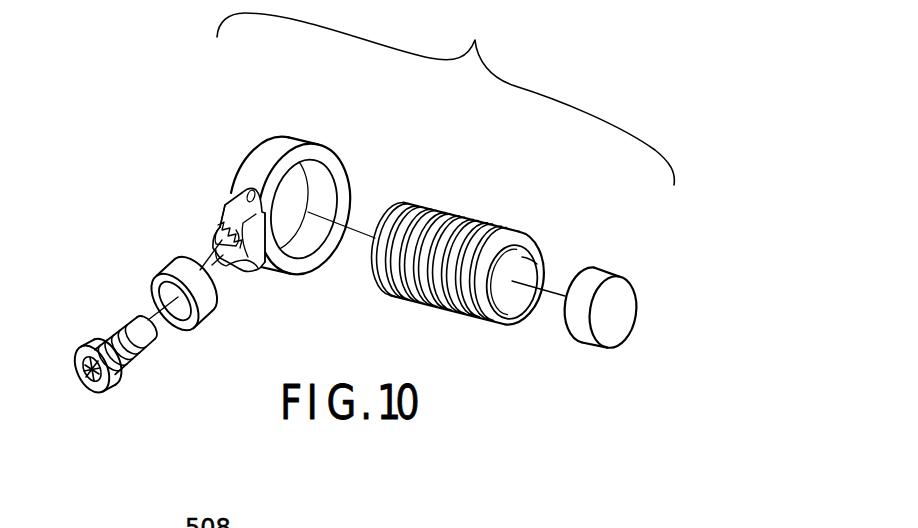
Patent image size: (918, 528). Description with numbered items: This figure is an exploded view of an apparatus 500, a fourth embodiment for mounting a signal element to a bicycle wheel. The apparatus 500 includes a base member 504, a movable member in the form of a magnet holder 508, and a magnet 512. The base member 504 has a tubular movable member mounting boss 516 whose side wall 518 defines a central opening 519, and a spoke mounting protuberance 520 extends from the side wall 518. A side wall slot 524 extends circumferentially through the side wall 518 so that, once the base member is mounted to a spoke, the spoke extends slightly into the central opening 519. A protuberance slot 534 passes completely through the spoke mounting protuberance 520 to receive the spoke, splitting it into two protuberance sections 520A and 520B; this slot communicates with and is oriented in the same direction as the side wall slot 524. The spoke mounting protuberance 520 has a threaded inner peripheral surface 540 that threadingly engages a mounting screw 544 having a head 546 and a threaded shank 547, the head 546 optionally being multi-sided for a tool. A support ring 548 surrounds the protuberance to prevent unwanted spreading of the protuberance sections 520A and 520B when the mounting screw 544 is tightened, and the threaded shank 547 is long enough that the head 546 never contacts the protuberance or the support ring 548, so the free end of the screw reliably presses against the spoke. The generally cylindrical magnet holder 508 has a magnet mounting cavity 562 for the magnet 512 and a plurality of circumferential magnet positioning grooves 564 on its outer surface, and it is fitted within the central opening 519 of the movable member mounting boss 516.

The apparatus 500 is at (445, 97).
The base member 504 is at (319, 212).
The magnet holder 508 is at (475, 237).
The magnet 512 is at (606, 250).
The movable member mounting boss 516 is at (300, 269).
The side wall 518 is at (348, 176).
The central opening 519 is at (309, 237).
The spoke mounting protuberance 520 is at (186, 255).
The protuberance section 520A is at (210, 250).
The protuberance section 520B is at (243, 265).
The side wall slot 524 is at (243, 190).
The protuberance slot 534 is at (225, 230).
The threaded inner peripheral surface 540 is at (218, 237).
The mounting screw 544 is at (133, 360).
The head 546 is at (103, 391).
The threaded shank 547 is at (133, 355).
The support ring 548 is at (160, 276).
The magnet mounting cavity 562 is at (540, 240).
The magnet positioning grooves 564 is at (443, 203).